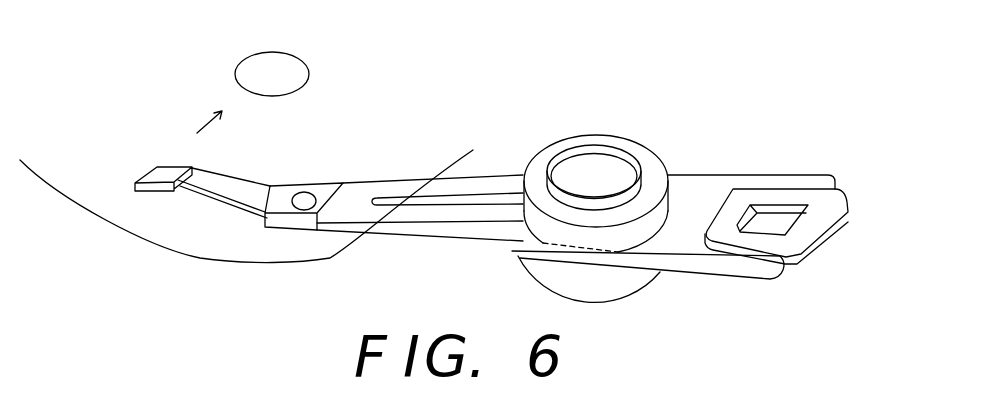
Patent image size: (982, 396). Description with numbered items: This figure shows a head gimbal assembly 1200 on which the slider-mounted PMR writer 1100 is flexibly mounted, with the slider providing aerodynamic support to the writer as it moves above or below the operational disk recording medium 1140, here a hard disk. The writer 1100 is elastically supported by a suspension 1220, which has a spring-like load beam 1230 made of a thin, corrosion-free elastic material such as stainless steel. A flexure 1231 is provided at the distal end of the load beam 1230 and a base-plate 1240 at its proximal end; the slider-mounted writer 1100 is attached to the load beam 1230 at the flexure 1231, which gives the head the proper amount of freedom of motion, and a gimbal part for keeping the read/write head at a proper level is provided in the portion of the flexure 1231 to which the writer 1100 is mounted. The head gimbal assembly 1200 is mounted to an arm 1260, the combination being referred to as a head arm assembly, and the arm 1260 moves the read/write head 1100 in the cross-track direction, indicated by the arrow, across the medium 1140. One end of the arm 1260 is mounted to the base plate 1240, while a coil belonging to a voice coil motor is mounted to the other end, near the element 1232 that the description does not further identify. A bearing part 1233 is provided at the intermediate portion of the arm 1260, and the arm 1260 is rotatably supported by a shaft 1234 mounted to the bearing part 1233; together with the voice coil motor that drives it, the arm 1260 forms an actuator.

The slider-mounted PMR writer 1100 is at (153, 168).
The disk recording medium 1140 is at (132, 240).
The head gimbal assembly 1200 is at (257, 238).
The suspension 1220 is at (452, 122).
The load beam 1230 is at (262, 190).
The flexure 1231 is at (138, 183).
The coil support 1232 is at (812, 238).
The bearing part 1233 is at (543, 156).
The shaft 1234 is at (598, 160).
The base-plate 1240 is at (338, 180).
The arm 1260 is at (405, 237).